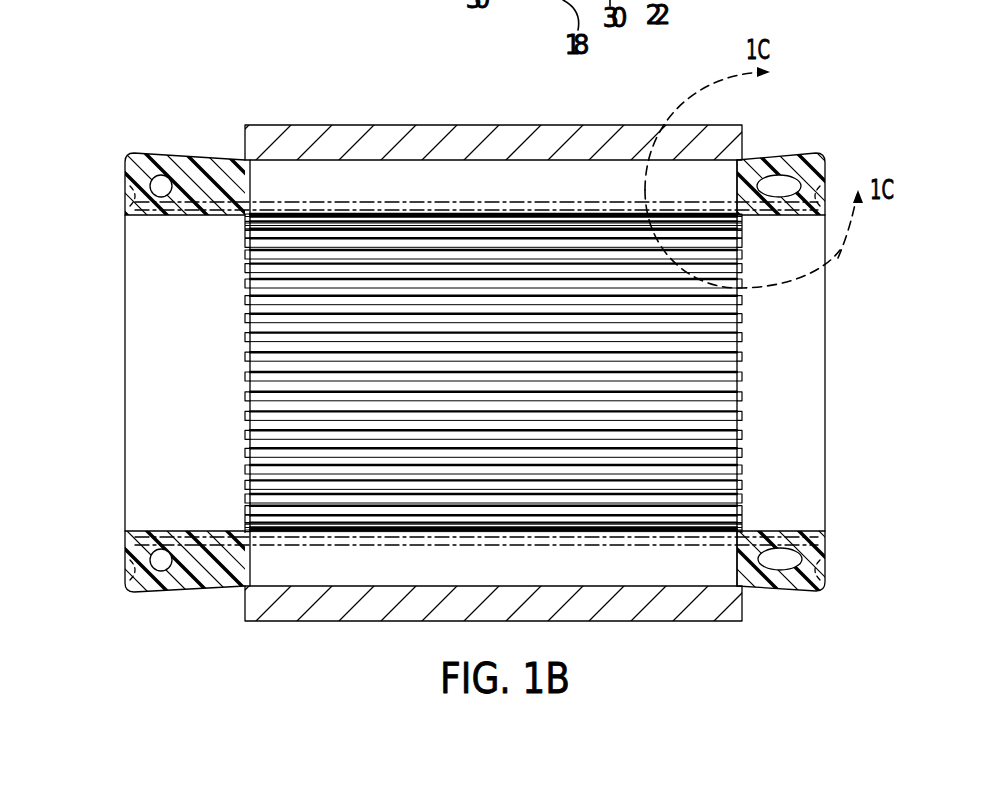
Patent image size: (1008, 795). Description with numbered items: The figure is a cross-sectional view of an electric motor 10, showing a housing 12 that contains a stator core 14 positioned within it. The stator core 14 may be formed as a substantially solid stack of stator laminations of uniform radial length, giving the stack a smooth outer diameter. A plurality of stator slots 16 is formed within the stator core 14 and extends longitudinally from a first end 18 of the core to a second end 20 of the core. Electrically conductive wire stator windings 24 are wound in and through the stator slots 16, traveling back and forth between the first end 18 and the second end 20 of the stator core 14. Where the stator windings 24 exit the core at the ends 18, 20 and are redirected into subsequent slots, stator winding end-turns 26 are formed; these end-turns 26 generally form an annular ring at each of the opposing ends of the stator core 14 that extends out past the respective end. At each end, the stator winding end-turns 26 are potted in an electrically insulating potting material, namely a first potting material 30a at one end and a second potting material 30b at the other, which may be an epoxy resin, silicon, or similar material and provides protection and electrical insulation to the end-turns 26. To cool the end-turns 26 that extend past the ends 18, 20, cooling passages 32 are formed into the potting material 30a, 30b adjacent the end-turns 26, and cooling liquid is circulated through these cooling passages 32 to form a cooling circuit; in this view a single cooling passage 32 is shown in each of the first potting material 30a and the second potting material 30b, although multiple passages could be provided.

The electric motor 10 is at (215, 26).
The housing 12 is at (390, 124).
The stator core 14 is at (286, 177).
The stator slots 16 is at (535, 188).
The first end 18 is at (752, 346).
The second end 20 is at (230, 346).
The stator windings 24 is at (455, 201).
The stator winding end-turns 26 is at (130, 191).
The first potting material 30a is at (809, 156).
The second potting material 30b is at (150, 150).
The cooling passages 32 is at (166, 178).